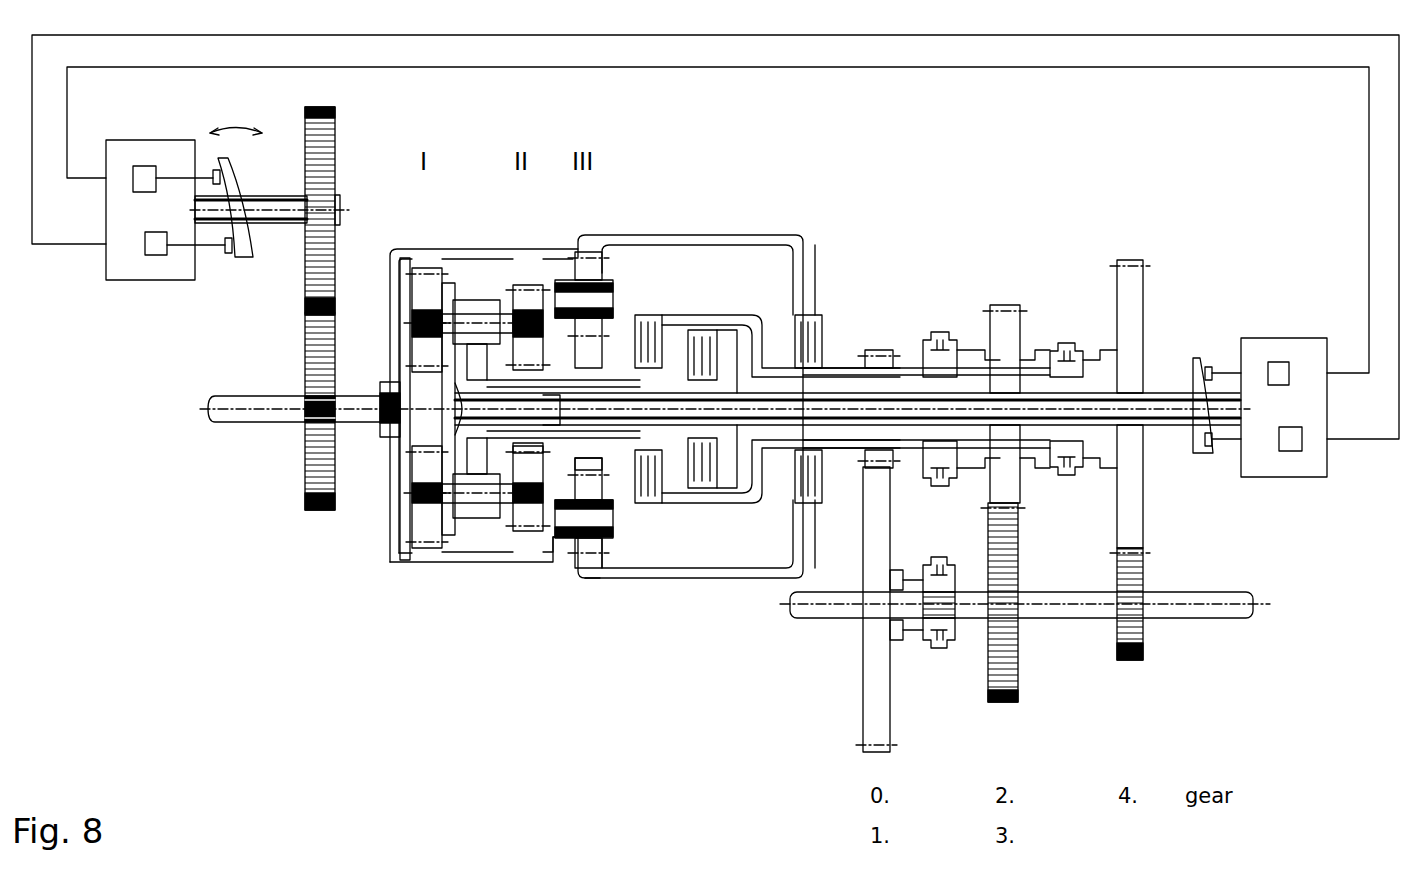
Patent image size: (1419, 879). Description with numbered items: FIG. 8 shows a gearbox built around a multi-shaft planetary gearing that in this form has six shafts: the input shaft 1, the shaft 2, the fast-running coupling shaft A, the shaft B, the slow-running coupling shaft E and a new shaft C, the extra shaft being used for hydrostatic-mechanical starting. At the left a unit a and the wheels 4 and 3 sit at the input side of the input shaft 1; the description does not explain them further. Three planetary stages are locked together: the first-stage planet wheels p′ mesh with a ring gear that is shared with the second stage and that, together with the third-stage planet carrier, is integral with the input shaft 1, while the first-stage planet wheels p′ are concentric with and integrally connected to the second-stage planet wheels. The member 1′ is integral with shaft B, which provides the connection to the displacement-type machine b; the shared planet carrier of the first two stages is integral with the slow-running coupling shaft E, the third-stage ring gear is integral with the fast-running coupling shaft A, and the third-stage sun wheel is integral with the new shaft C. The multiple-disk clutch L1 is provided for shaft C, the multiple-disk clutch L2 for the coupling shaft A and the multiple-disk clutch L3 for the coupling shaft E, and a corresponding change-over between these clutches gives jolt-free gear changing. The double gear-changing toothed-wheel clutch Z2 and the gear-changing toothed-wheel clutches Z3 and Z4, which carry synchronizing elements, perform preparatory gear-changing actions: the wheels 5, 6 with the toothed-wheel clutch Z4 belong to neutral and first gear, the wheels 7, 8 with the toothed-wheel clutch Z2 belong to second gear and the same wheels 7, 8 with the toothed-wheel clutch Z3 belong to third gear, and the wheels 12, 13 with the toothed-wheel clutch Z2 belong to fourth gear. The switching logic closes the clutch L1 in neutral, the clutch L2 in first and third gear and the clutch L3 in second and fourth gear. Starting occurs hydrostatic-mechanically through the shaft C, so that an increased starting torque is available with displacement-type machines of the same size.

The control unit a is at (128, 270).
The gear 4 is at (337, 118).
The gear 3 is at (305, 507).
The input shaft 1 is at (232, 416).
The stage I sun wheel 1′ is at (422, 391).
The stage I planet wheels p′ is at (425, 297).
The new shaft C is at (557, 373).
The fast-running coupling shaft A is at (668, 577).
The slow-running coupling shaft E is at (672, 432).
The multiple-disk clutch L1 is at (650, 386).
The multiple-disk clutch L3 is at (781, 386).
The multiple-disk clutch L2 is at (821, 386).
The wheel 5 is at (862, 461).
The gear-changing toothed-wheel clutch Z3 is at (961, 386).
The wheel 7 is at (1010, 487).
The double gear-changing toothed-wheel clutch Z2 is at (1068, 381).
The wheel 12 is at (1135, 278).
The shaft B is at (1168, 398).
The displacement-type machine b is at (1307, 468).
The shaft 2 is at (1238, 594).
The wheel 6 is at (868, 720).
The gear-changing toothed-wheel clutch Z4 is at (929, 634).
The wheel 8 is at (1018, 700).
The wheel 13 is at (1143, 656).